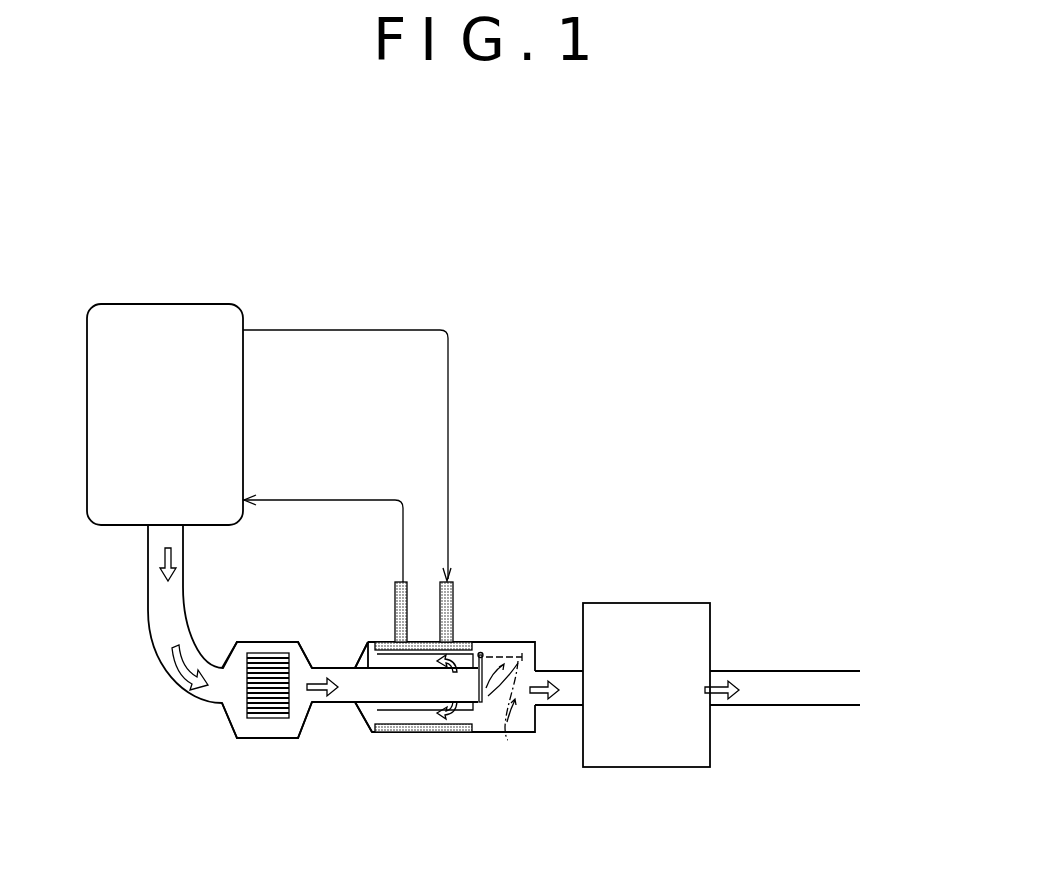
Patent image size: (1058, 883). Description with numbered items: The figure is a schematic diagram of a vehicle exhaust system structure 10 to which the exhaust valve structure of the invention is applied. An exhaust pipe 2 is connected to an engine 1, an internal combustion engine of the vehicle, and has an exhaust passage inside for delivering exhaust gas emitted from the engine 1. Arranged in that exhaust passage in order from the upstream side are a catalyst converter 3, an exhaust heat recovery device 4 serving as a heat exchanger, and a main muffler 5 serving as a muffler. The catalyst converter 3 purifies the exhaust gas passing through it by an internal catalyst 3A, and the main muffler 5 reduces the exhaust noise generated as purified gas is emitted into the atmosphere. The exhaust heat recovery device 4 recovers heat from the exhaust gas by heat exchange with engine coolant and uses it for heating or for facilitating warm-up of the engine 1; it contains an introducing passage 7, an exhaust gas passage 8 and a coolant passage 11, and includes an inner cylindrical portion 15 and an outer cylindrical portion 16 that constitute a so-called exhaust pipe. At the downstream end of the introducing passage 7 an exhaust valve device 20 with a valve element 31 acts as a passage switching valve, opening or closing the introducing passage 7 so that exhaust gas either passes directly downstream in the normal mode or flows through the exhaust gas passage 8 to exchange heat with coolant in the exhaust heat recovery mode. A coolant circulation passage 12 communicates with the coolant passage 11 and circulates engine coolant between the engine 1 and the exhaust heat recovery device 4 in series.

The engine 1 is at (246, 312).
The exhaust pipe 2 is at (185, 583).
The catalyst converter 3 is at (267, 672).
The catalyst 3A is at (272, 718).
The exhaust heat recovery device 4 is at (391, 584).
The main muffler 5 is at (645, 600).
The introducing passage 7 is at (400, 699).
The exhaust gas passage 8 is at (378, 640).
The vehicle exhaust system structure 10 is at (583, 398).
The coolant passage 11 is at (367, 580).
The coolant circulation passage 12 is at (326, 500).
The inner cylindrical portion 15 is at (462, 640).
The outer cylindrical portion 16 is at (398, 732).
The exhaust valve device 20 is at (508, 740).
The valve element 31 is at (482, 702).